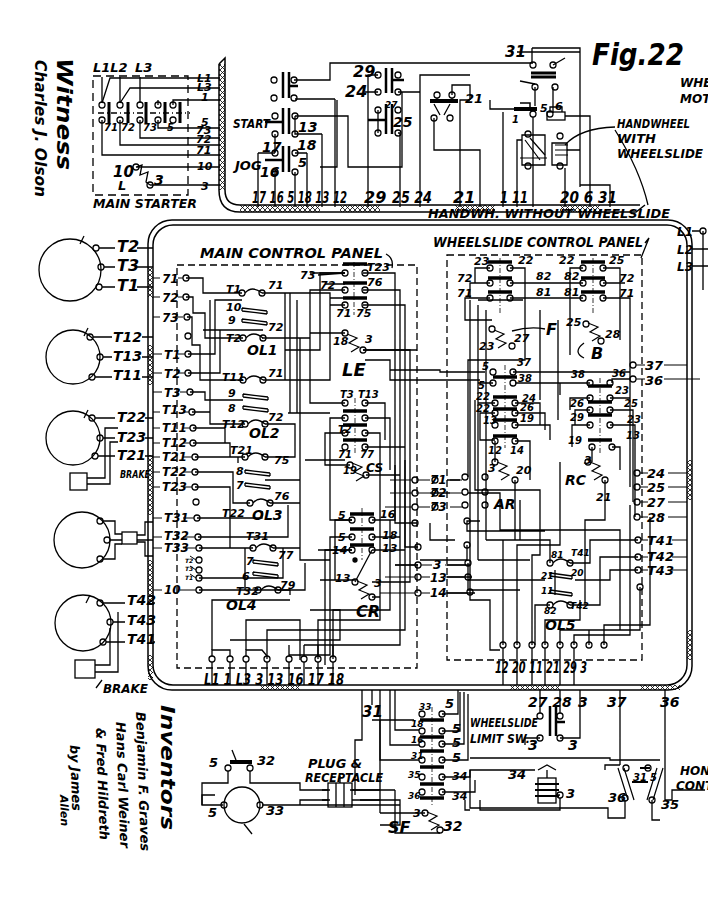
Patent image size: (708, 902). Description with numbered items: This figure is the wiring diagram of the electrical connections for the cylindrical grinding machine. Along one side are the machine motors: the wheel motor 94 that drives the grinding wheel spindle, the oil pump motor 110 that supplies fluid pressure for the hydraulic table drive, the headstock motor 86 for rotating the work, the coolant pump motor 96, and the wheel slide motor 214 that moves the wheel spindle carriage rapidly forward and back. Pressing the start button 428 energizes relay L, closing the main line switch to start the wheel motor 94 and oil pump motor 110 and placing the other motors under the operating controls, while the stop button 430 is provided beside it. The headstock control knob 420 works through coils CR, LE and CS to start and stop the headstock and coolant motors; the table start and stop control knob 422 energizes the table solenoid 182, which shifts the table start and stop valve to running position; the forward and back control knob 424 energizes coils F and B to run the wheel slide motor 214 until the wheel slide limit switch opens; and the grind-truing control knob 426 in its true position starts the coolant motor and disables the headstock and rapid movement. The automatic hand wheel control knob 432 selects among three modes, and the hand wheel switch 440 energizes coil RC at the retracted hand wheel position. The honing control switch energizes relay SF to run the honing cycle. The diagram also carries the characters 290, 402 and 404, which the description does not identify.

The spindle driving motor 94 is at (79, 261).
The oil pump motor 110 is at (90, 348).
The headstock motor 86 is at (88, 443).
The coolant pump motor 96 is at (108, 518).
The wheel slide motor 214 is at (102, 629).
The honing motor 290 is at (252, 814).
The table solenoid 182 is at (540, 772).
The limit switch LS1 402 is at (248, 760).
The limit switch contact 404 is at (255, 760).
The headstock control knob 420 is at (282, 76).
The table start and stop control knob 422 is at (655, 768).
The wheel spindle slide rapid movement forward and back control knob 424 is at (405, 70).
The grind-truing control knob 426 is at (563, 62).
The start button 428 is at (568, 107).
The stop button 430 is at (511, 117).
The automatic hand wheel control knob 432 is at (518, 150).
The hand wheel switch 440 is at (433, 129).